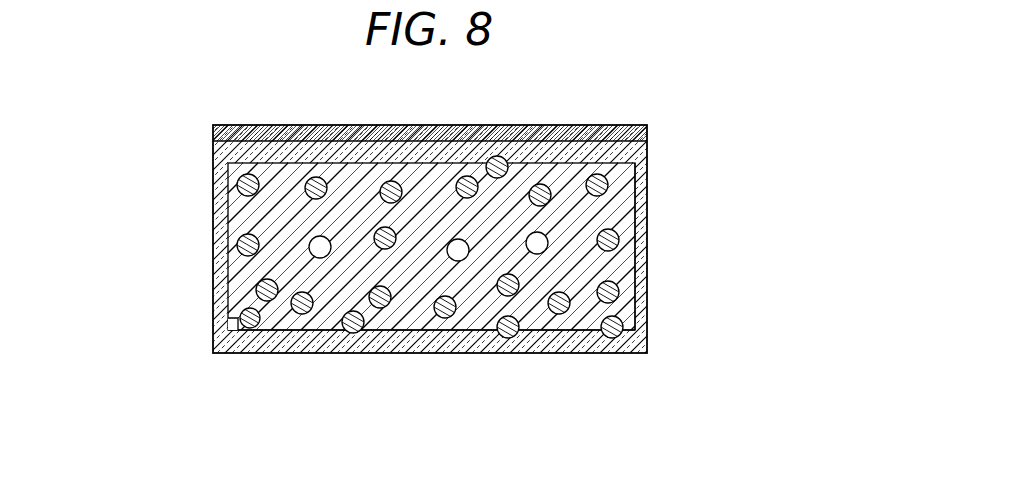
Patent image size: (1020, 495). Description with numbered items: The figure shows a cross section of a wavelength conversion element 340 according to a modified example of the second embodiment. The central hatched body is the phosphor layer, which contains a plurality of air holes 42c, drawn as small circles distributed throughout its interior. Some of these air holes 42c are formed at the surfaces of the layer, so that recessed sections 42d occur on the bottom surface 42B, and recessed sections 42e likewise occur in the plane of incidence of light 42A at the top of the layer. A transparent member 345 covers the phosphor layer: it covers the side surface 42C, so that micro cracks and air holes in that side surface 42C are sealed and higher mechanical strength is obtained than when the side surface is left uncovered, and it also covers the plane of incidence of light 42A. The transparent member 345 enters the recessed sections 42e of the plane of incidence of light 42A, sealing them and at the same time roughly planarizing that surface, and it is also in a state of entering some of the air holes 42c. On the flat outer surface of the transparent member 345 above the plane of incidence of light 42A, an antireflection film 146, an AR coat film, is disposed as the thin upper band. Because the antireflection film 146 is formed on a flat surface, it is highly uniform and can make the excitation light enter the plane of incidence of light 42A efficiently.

The wavelength conversion element 340 is at (668, 115).
The antireflection film 146 is at (647, 133).
The plane of incidence of light 42A is at (213, 148).
The bottom surface 42B is at (225, 347).
The side surface 42C is at (647, 250).
The air holes 42c is at (242, 184).
The recessed sections 42d is at (238, 318).
The recessed sections 42e is at (507, 166).
The transparent member 345 is at (645, 308).